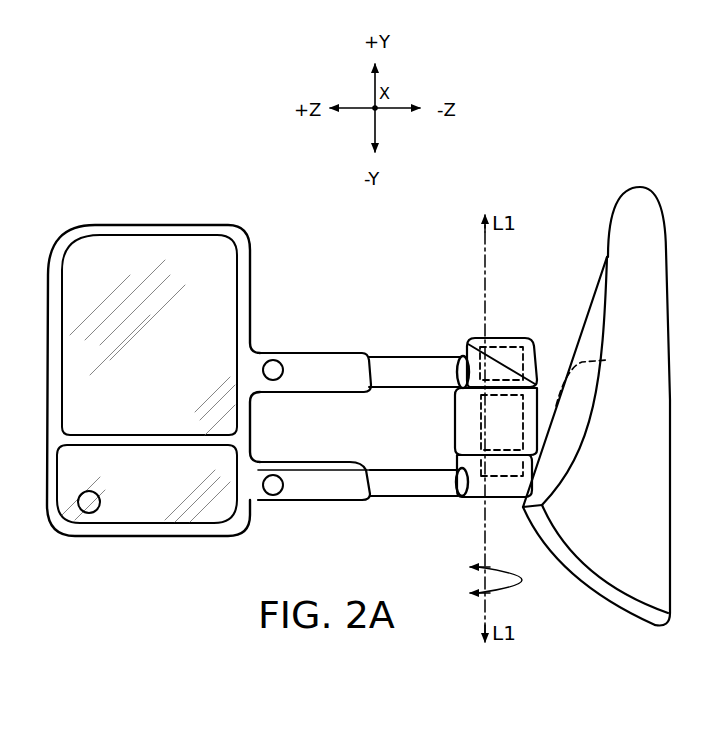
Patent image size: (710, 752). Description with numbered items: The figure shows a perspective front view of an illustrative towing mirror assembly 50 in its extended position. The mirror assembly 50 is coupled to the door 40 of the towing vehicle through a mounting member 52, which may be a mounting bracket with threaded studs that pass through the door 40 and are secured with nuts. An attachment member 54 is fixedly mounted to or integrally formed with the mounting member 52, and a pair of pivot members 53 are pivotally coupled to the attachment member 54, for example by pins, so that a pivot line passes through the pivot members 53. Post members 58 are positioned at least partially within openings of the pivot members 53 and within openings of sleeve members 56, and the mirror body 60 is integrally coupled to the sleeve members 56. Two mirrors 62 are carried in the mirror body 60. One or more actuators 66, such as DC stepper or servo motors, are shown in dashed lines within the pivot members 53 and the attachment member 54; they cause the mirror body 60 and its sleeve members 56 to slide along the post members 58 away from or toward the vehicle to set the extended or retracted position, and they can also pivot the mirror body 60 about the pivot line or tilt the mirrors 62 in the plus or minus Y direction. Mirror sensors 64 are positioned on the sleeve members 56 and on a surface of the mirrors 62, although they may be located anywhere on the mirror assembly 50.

The door 40 is at (640, 187).
The mirror assembly 50 is at (115, 158).
The mounting member 52 is at (592, 282).
The pivot members 53 is at (476, 338).
The attachment member 54 is at (538, 425).
The sleeve members 56 is at (335, 353).
The post members 58 is at (418, 357).
The mirror body 60 is at (232, 525).
The mirrors 62 is at (200, 260).
The mirror sensors 64 is at (273, 368).
The actuators 66 is at (498, 347).